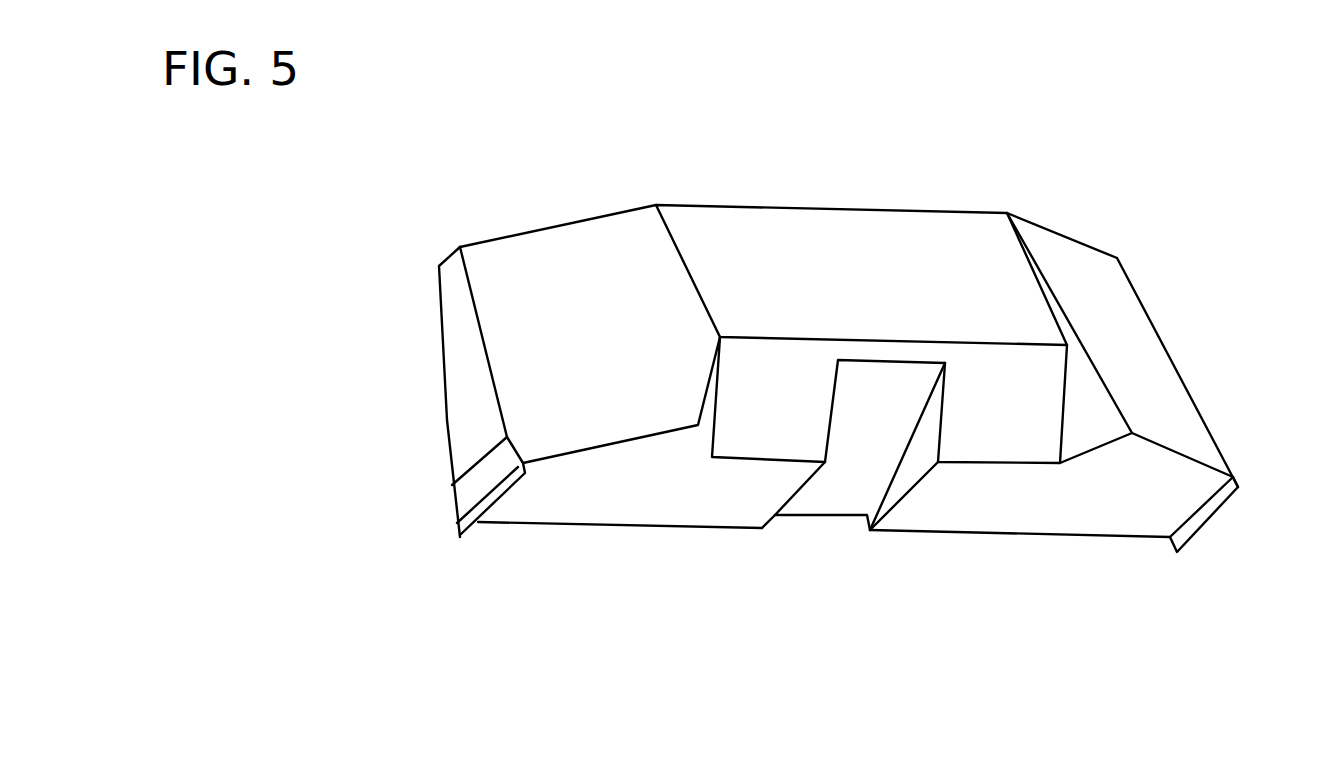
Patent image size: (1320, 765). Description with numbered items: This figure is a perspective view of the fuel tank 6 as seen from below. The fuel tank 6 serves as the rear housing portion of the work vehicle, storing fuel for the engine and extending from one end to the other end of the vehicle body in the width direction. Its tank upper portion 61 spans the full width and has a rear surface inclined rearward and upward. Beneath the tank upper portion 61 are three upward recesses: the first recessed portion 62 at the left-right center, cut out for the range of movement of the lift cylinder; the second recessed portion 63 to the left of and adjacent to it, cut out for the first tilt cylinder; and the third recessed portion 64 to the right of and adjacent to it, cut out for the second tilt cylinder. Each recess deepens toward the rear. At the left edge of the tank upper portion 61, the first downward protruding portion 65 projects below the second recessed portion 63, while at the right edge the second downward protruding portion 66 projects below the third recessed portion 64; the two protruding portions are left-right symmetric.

The fuel tank 6 is at (1072, 206).
The tank upper portion 61 is at (837, 232).
The first recessed portion 62 is at (842, 488).
The second recessed portion 63 is at (783, 390).
The third recessed portion 64 is at (1000, 400).
The first downward protruding portion 65 is at (560, 410).
The second downward protruding portion 66 is at (1182, 425).